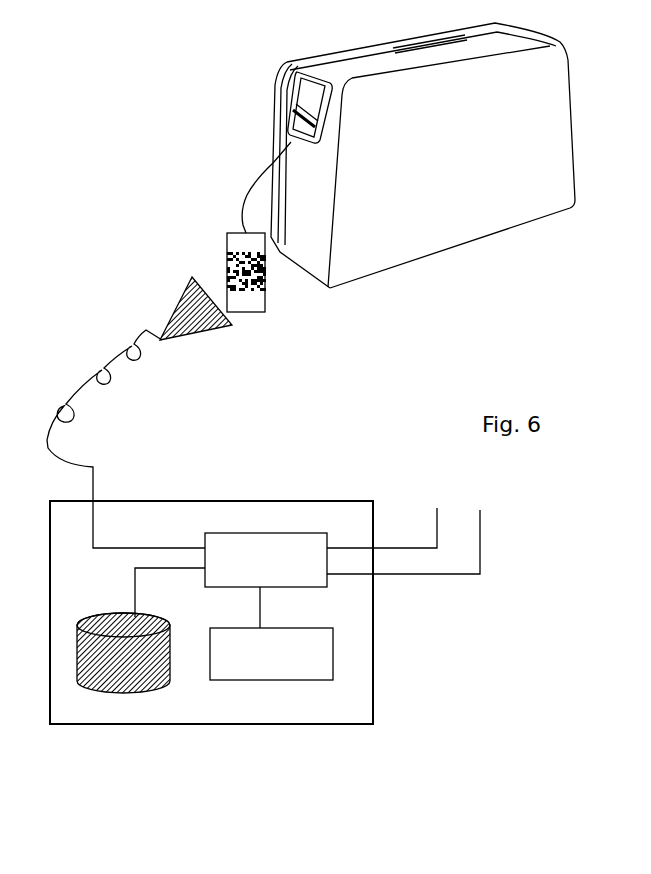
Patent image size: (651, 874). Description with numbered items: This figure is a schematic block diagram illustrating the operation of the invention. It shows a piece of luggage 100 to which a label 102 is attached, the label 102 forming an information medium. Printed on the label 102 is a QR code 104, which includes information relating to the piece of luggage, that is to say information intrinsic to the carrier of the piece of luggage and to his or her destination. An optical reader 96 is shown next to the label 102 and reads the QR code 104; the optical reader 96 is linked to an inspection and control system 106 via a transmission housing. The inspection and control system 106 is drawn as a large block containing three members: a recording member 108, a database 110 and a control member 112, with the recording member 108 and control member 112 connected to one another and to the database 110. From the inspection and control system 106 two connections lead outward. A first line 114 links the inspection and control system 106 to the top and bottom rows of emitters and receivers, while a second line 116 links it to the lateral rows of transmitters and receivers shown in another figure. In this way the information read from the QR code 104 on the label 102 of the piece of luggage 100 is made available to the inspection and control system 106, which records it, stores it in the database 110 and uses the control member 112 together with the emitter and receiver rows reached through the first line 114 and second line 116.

The optical reader 96 is at (177, 307).
The piece of luggage 100 is at (470, 212).
The label 102 is at (250, 305).
The QR code 104 is at (227, 267).
The inspection and control system 106 is at (263, 768).
The recording member 108 is at (242, 547).
The database 110 is at (117, 677).
The control member 112 is at (312, 657).
The first line 114 is at (387, 515).
The second line 116 is at (417, 529).